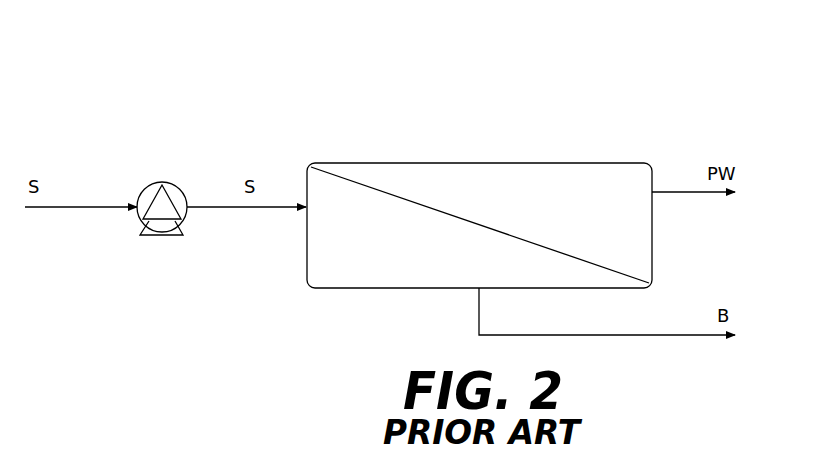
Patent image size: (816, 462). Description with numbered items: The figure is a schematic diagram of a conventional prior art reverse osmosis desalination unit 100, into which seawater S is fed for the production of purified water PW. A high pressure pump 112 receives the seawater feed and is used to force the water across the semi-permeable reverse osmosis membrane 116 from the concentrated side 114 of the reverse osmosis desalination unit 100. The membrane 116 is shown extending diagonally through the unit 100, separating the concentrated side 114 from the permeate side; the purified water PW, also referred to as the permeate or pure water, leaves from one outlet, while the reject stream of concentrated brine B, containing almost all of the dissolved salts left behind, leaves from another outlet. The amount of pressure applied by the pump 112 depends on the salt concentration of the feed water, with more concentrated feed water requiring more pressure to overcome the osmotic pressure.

The reverse osmosis desalination unit 100 is at (199, 79).
The high pressure pump 112 is at (155, 183).
The concentrated side 114 is at (315, 267).
The semi-permeable reverse osmosis membrane 116 is at (416, 202).